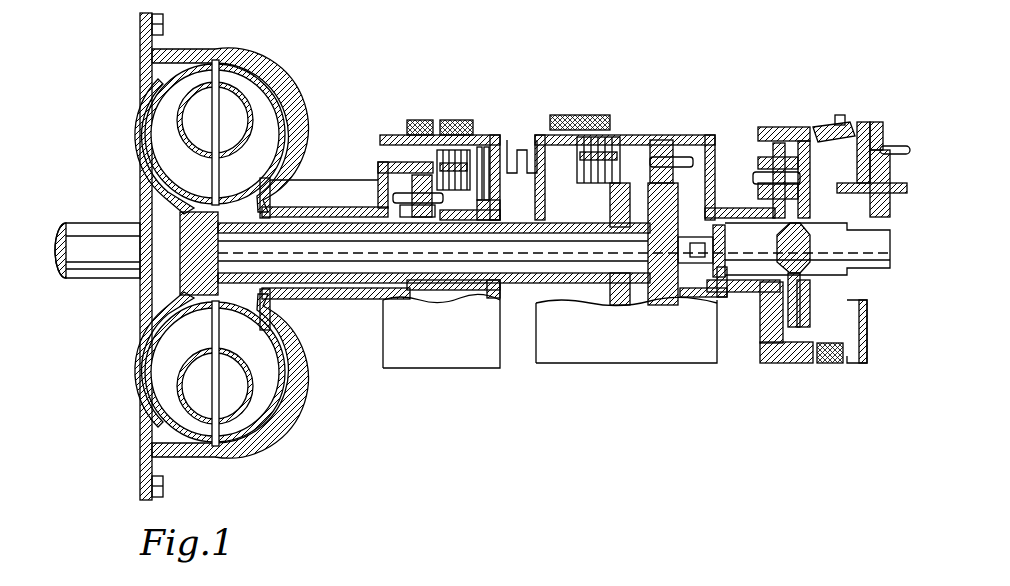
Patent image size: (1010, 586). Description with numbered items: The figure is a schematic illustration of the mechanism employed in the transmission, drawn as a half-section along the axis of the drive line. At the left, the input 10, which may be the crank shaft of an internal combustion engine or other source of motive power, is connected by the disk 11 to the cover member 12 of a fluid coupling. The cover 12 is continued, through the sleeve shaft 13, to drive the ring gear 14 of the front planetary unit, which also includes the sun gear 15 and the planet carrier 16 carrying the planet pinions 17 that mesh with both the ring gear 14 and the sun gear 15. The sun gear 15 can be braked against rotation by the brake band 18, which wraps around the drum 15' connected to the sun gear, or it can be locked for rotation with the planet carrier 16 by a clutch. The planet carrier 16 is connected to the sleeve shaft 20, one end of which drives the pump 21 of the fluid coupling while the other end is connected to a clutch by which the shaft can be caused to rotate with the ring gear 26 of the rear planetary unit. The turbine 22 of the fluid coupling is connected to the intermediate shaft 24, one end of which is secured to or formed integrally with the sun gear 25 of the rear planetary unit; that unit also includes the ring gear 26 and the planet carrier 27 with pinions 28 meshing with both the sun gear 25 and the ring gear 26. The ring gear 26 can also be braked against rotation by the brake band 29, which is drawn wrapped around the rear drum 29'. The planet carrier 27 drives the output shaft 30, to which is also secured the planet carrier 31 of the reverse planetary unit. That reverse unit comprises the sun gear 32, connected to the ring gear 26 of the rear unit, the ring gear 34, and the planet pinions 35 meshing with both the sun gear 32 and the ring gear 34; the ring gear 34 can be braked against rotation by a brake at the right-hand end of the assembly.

The input 10 is at (100, 237).
The disk 11 is at (128, 137).
The cover member 12 is at (177, 47).
The sleeve shaft 13 is at (291, 207).
The ring gear 14 is at (400, 167).
The sun gear 15 is at (483, 200).
The drum 15' is at (476, 151).
The planet carrier 16 is at (410, 212).
The planet pinions 17 is at (415, 220).
The brake band 18 is at (427, 127).
The sleeve shaft 20 is at (340, 226).
The pump 21 is at (266, 143).
The turbine 22 is at (185, 243).
The intermediate shaft 24 is at (530, 256).
The sun gear 25 is at (675, 196).
The ring gear 26 is at (679, 137).
The planet carrier 27 is at (760, 180).
The pinions 28 is at (648, 157).
The brake band 29 is at (583, 109).
The rear drum 29' is at (660, 164).
The output shaft 30 is at (877, 244).
The planet carrier 31 is at (807, 203).
The sun gear 32 is at (775, 202).
The ring gear 34 is at (775, 133).
The planet pinions 35 is at (757, 160).